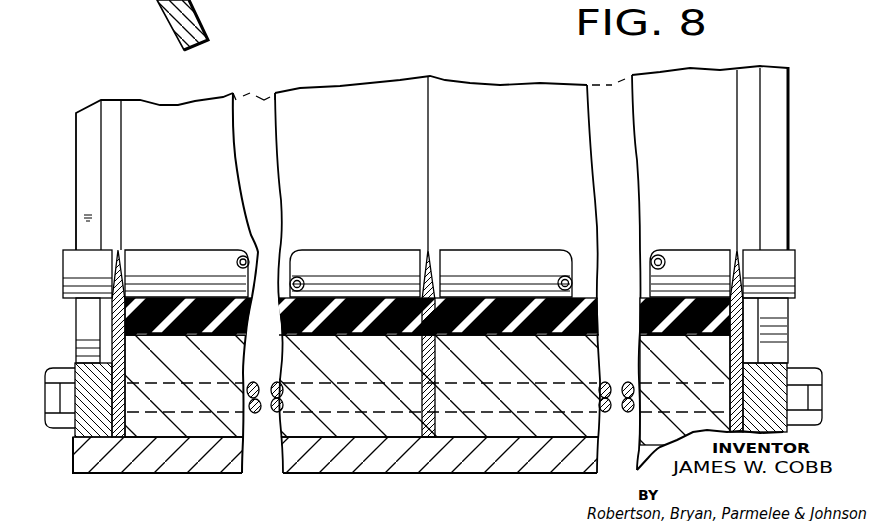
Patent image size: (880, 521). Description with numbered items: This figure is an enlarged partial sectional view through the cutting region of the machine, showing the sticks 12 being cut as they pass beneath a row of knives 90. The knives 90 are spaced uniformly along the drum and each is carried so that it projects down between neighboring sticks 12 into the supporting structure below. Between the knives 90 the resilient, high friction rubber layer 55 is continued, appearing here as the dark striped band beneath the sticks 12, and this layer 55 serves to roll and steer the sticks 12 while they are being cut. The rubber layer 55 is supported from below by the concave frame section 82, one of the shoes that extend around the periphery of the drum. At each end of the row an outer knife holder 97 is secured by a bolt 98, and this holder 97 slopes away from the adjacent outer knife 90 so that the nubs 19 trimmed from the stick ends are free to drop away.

The stick 12 is at (199, 262).
The nub 19 is at (76, 266).
The resilient high friction layer 55 is at (636, 318).
The concave frame section 82 is at (508, 458).
The knife 90 is at (117, 343).
The outer knife holder 97 is at (90, 377).
The bolt 98 is at (167, 412).